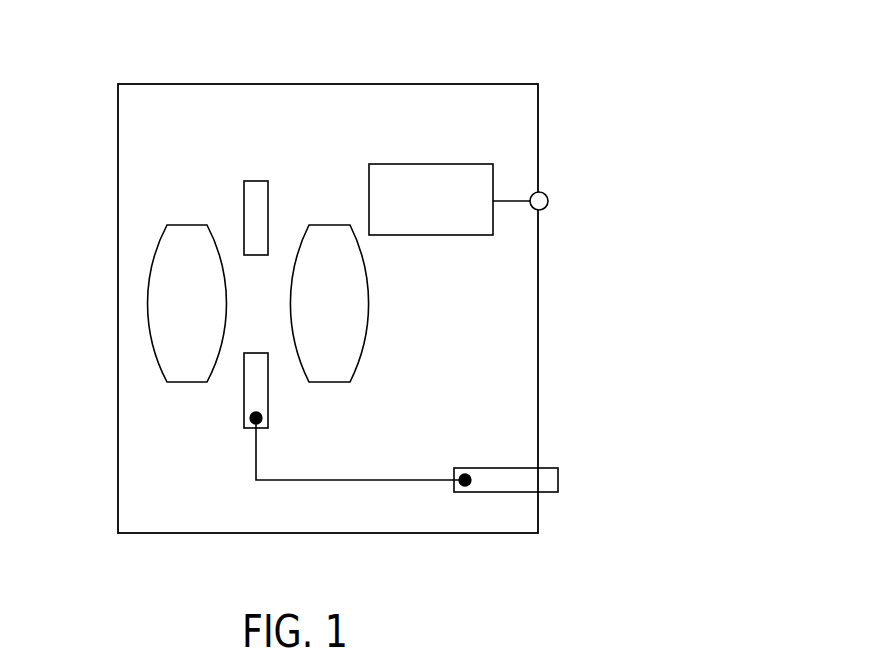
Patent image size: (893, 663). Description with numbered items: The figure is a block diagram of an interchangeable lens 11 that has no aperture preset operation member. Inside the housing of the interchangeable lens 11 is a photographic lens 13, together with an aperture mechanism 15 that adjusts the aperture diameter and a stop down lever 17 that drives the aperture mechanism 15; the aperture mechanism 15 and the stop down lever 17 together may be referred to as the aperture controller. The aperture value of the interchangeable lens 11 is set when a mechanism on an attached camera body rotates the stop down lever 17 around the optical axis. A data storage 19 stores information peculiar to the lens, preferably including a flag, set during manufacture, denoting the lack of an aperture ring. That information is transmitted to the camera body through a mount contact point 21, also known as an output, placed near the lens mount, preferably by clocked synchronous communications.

The interchangeable lens 11 is at (285, 84).
The photographic lens 13 is at (154, 320).
The aperture mechanism 15 is at (249, 403).
The stop down lever 17 is at (520, 485).
The data storage 19 is at (467, 233).
The mount contact point 21 is at (541, 190).